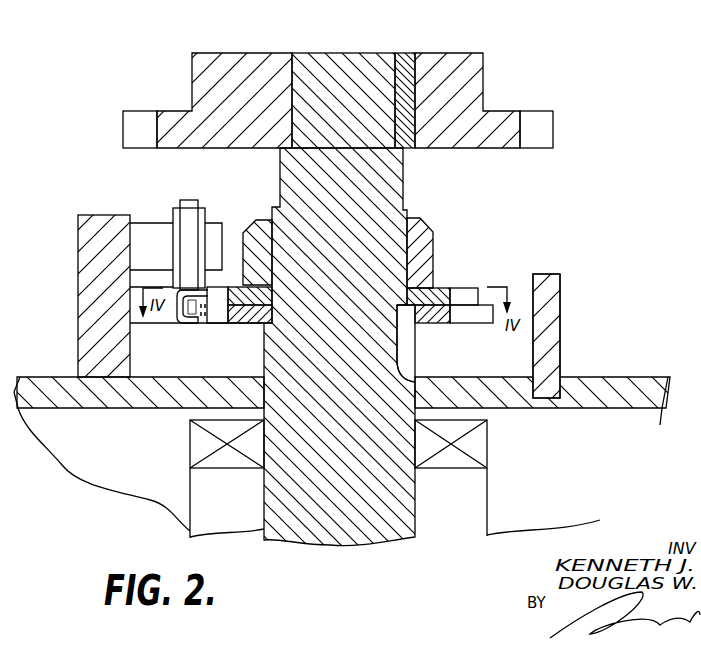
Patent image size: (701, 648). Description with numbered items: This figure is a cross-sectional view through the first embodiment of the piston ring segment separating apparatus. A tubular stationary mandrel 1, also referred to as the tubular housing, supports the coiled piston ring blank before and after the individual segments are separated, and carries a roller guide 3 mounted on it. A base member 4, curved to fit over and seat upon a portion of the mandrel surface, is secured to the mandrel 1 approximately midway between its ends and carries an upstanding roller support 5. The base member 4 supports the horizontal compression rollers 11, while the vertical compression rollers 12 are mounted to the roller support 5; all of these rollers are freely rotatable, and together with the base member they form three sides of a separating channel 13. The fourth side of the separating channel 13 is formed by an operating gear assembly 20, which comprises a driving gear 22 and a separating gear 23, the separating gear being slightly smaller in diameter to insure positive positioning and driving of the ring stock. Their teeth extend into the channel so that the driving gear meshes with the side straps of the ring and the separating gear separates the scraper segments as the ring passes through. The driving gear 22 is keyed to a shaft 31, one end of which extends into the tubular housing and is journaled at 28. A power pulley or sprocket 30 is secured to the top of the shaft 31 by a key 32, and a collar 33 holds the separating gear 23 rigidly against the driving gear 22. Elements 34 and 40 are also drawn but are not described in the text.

The tubular stationary mandrel 1 is at (342, 415).
The roller guide 3 is at (553, 292).
The base member 4 is at (108, 380).
The upstanding roller support 5 is at (80, 288).
The horizontal compression rollers 11 is at (157, 327).
The vertical compression rollers 12 is at (191, 207).
The separating channel 13 is at (191, 320).
The operating gear assembly 20 is at (484, 206).
The driving gear 22 is at (472, 315).
The separating gear 23 is at (478, 288).
The journal 28 is at (480, 445).
The power pulley or sprocket 30 is at (473, 75).
The shaft 31 is at (400, 180).
The key 32 is at (412, 62).
The collar 33 is at (433, 237).
The pin 34 is at (403, 353).
The spring clip 40 is at (206, 304).